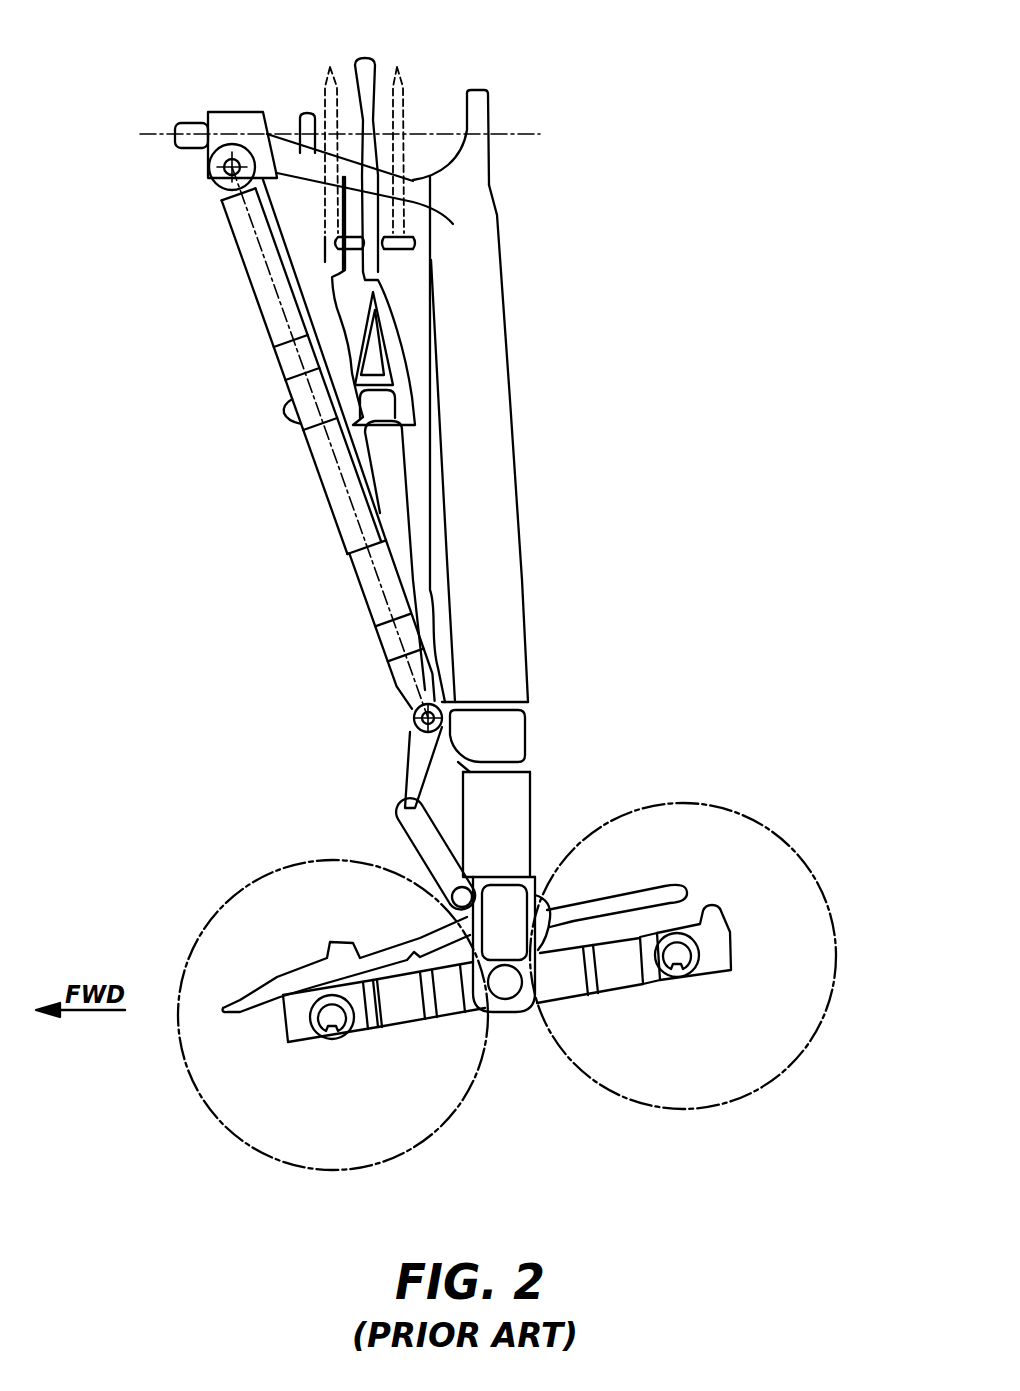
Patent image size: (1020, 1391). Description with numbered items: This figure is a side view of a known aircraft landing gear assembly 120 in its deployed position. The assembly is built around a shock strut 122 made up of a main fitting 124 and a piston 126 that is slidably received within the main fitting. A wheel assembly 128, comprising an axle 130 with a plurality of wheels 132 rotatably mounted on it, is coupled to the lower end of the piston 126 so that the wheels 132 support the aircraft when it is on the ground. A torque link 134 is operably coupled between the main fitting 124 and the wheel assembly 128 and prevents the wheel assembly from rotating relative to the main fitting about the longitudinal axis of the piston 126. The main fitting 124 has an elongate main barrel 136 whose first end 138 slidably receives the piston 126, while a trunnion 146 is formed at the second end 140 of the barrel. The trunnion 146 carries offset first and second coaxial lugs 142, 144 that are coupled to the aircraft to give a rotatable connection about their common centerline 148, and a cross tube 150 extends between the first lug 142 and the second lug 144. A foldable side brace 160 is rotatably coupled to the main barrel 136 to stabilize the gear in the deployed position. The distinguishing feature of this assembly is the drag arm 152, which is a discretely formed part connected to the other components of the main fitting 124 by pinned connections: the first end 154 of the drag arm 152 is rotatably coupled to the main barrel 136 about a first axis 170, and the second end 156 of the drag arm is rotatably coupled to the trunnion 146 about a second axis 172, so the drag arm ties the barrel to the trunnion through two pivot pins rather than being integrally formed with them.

The landing gear assembly 120 is at (623, 182).
The shock strut 122 is at (596, 673).
The main fitting 124 is at (518, 473).
The piston 126 is at (517, 820).
The wheel assembly 128 is at (789, 832).
The axle 130 is at (690, 956).
The wheels 132 is at (830, 900).
The torque link 134 is at (407, 787).
The main barrel 136 is at (512, 395).
The first end of main barrel 138 is at (530, 719).
The second end of main barrel 140 is at (496, 212).
The first lug 142 is at (489, 92).
The second lug 144 is at (230, 118).
The trunnion 146 is at (456, 81).
The common centerline 148 is at (165, 136).
The cross tube 150 is at (288, 157).
The drag arm 152 is at (313, 466).
The first end of drag arm 154 is at (409, 712).
The second end of drag arm 156 is at (240, 213).
The foldable side brace 160 is at (399, 350).
The first axis 170 is at (417, 736).
The second axis 172 is at (222, 174).